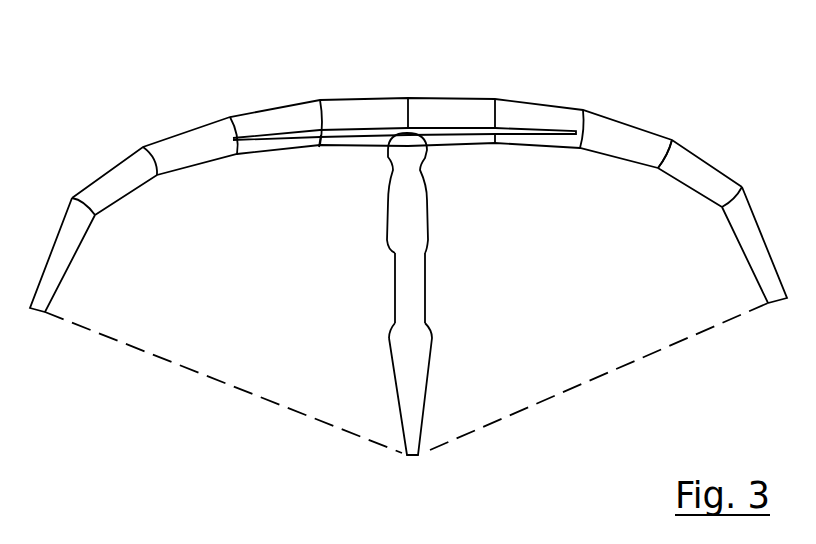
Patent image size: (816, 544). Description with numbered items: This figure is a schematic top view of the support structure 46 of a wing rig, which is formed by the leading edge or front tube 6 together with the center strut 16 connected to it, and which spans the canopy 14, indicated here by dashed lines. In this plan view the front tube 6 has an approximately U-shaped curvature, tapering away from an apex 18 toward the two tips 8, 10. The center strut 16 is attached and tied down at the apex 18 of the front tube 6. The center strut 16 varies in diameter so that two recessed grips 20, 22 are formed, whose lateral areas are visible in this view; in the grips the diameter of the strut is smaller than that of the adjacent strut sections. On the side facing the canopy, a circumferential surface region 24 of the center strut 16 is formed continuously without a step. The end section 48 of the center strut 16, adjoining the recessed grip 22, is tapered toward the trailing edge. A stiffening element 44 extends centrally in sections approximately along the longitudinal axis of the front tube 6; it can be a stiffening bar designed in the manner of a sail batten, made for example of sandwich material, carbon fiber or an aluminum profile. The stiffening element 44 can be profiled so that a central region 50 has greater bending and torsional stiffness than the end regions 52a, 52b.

The leading edge (front tube) 6 is at (627, 138).
The tip 8 is at (33, 310).
The tip 10 is at (778, 305).
The canopy 14 is at (650, 353).
The center strut 16 is at (448, 294).
The apex 18 is at (408, 98).
The recessed grip 20 is at (427, 180).
The recessed grip 22 is at (432, 296).
The circumferential surface region 24 is at (412, 317).
The stiffening element 44 is at (318, 147).
The support structure 46 is at (700, 130).
The end section 48 is at (432, 390).
The central region 50 is at (411, 81).
The end region 52a is at (570, 130).
The end region 52b is at (252, 132).